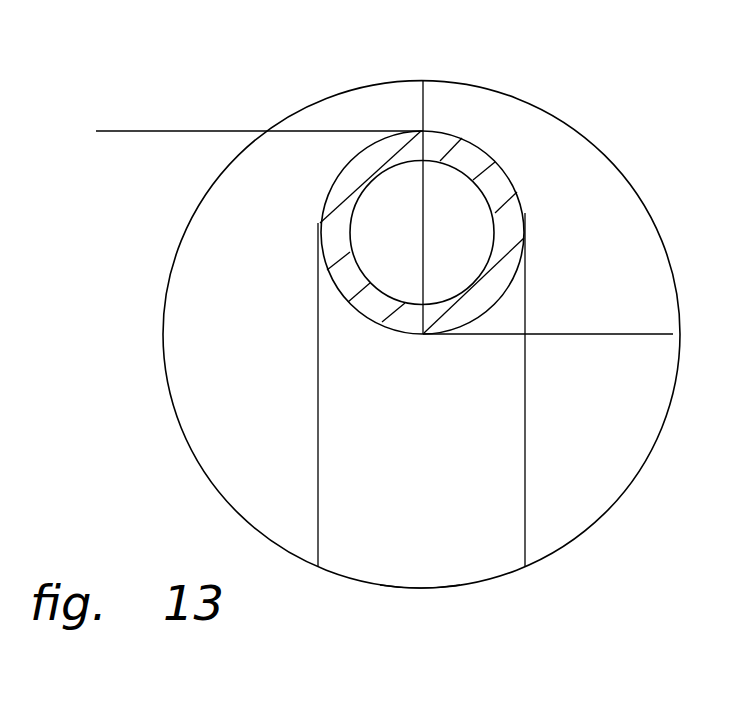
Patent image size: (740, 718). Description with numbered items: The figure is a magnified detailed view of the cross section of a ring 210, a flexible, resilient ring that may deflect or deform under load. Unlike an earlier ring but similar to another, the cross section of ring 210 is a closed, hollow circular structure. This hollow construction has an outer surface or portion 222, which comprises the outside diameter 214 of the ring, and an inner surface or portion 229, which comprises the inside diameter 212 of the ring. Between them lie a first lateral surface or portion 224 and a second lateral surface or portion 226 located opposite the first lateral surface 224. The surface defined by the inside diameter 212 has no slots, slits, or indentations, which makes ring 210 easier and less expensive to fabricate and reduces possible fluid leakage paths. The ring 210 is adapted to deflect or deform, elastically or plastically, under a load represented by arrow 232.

The ring 210 is at (235, 107).
The inside diameter 212 is at (633, 337).
The outside diameter 214 is at (135, 131).
The outer surface or portion 222 is at (423, 131).
The first lateral surface or portion 224 is at (320, 223).
The second lateral surface or portion 226 is at (525, 213).
The inner surface or portion 229 is at (421, 334).
The arrow representing a load 232 is at (419, 592).